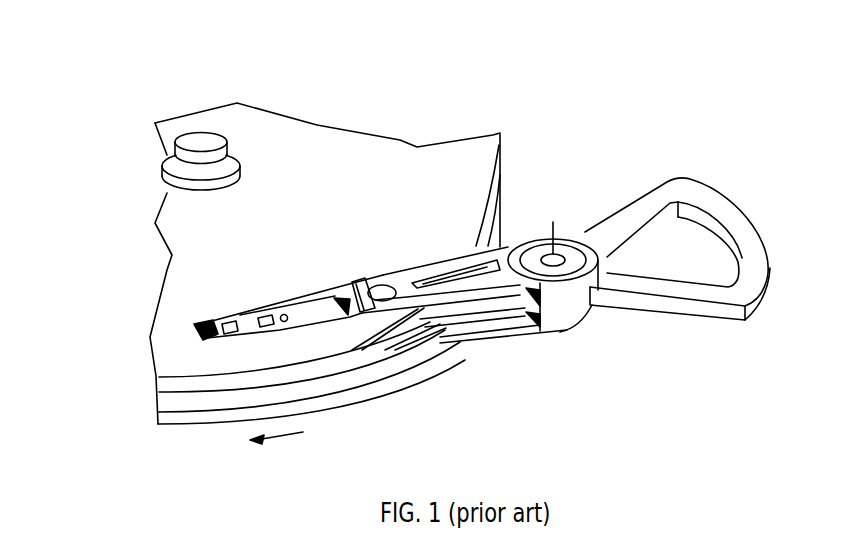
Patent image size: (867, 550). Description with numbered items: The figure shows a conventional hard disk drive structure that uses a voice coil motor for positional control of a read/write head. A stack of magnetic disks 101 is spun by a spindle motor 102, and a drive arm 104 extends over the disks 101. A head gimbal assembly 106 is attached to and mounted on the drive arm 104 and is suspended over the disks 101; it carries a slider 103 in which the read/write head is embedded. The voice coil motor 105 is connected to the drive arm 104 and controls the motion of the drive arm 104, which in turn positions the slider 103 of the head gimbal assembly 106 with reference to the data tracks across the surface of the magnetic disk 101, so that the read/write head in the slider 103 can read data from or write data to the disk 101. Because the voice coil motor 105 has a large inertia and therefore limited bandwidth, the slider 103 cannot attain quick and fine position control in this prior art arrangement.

The magnetic disks 101 is at (183, 228).
The spindle motor 102 is at (207, 148).
The slider 103 is at (222, 333).
The drive arm 104 is at (468, 254).
The voice coil motor 105 is at (707, 310).
The head gimbal assembly 106 is at (313, 313).